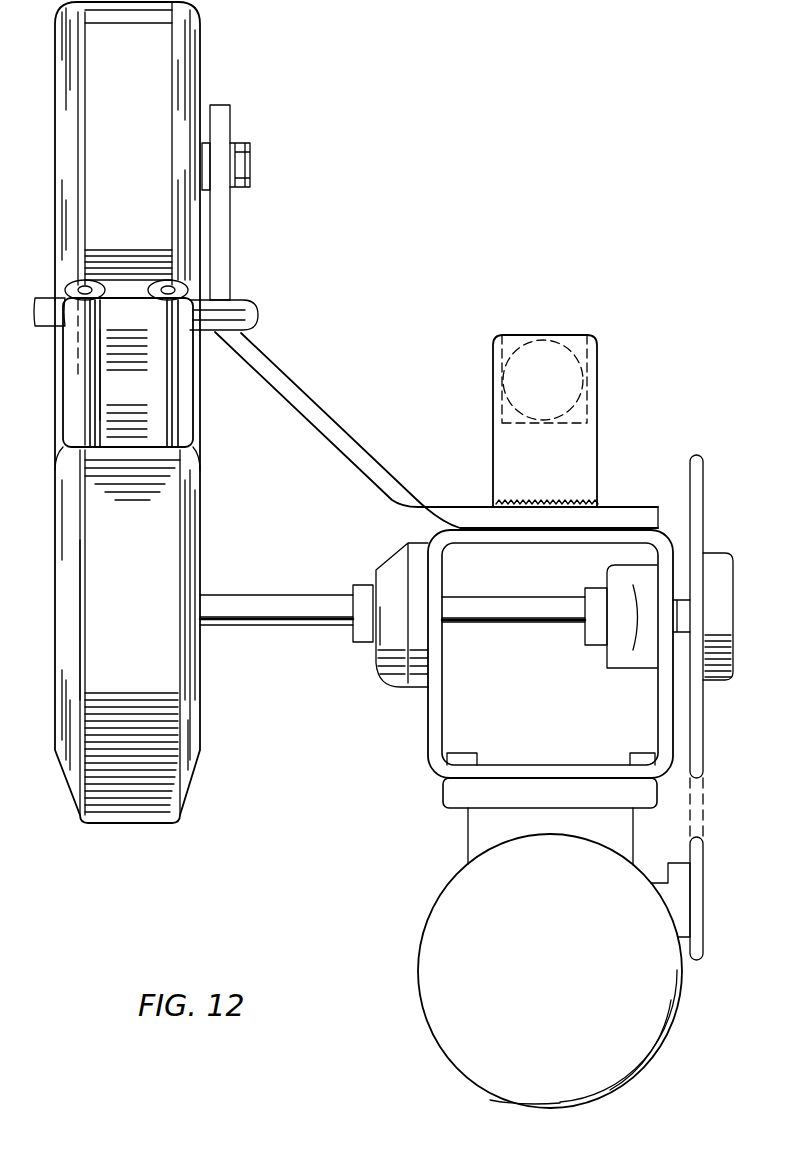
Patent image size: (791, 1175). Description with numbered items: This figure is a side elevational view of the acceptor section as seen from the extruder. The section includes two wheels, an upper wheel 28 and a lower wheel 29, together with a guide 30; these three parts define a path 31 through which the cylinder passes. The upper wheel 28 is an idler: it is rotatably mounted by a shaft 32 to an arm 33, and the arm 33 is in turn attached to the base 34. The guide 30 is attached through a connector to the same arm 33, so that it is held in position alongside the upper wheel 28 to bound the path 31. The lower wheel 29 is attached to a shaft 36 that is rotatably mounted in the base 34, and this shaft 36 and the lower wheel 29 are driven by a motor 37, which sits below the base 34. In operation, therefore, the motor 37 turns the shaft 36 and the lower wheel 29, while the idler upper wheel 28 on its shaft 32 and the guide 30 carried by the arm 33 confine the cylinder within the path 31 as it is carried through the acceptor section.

The upper wheel 28 is at (170, 80).
The lower wheel 29 is at (157, 663).
The guide 30 is at (187, 385).
The path 31 is at (115, 388).
The shaft 32 is at (252, 157).
The arm 33 is at (338, 444).
The base 34 is at (653, 540).
The shaft 36 is at (278, 606).
The motor 37 is at (480, 912).